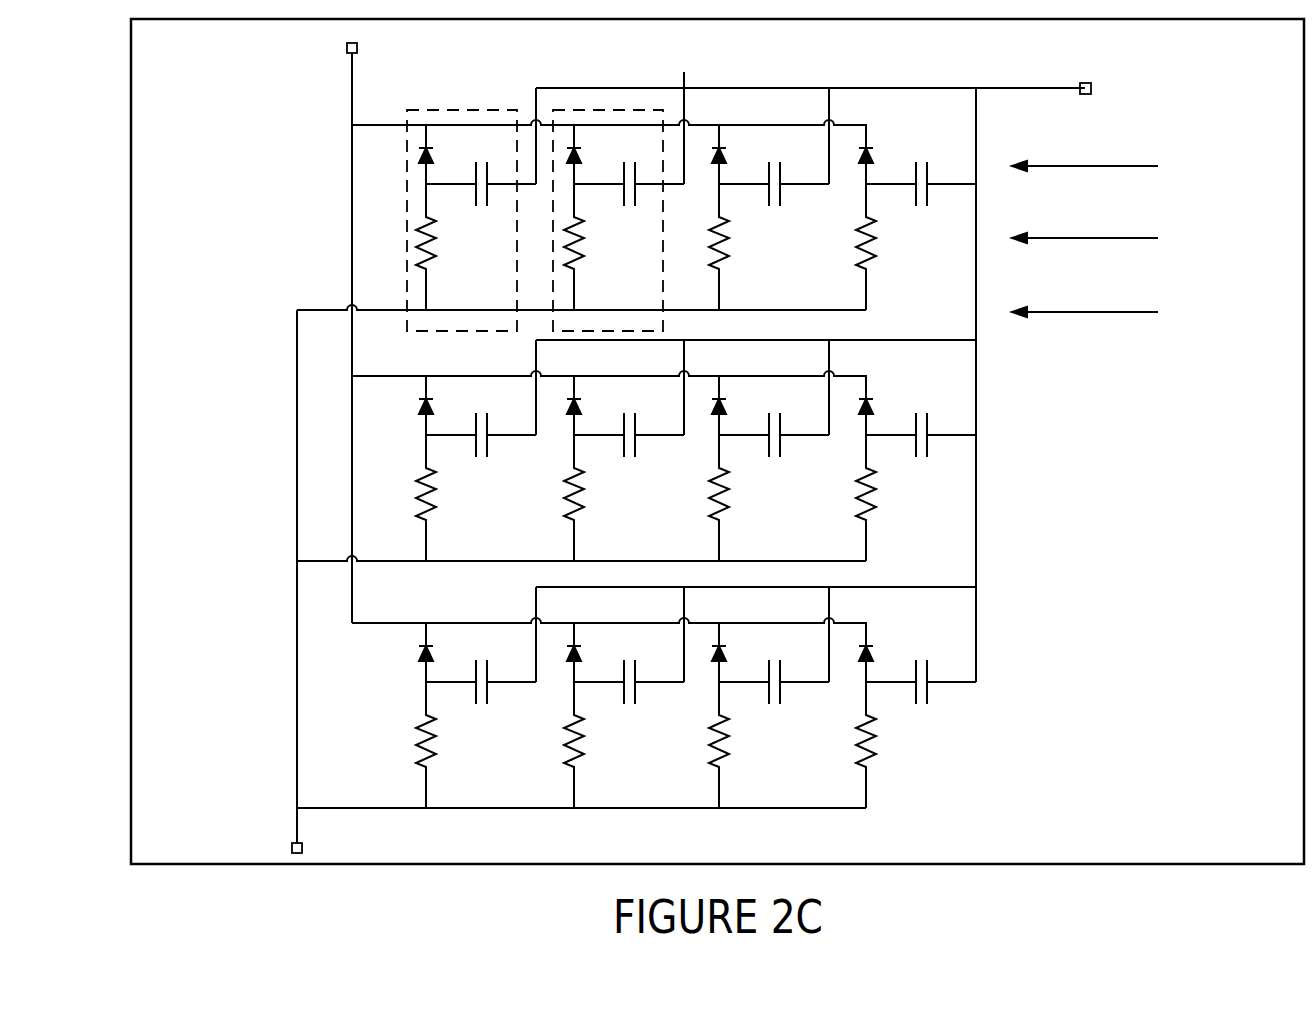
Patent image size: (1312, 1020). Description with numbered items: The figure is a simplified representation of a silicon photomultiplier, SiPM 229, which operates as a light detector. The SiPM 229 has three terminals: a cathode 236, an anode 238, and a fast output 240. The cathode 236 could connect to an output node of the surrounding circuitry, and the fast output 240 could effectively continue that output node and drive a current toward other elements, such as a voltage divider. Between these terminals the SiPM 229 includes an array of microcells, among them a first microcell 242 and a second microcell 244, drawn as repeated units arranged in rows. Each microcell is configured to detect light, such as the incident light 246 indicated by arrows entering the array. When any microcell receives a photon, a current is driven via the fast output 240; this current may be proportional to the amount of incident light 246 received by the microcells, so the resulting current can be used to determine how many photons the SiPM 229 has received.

The silicon photomultiplier 229 is at (1295, 853).
The cathode 236 is at (346, 49).
The anode 238 is at (290, 848).
The fast output 240 is at (1086, 82).
The first microcell 242 is at (460, 110).
The second microcell 244 is at (607, 110).
The incident light 246 is at (1068, 356).